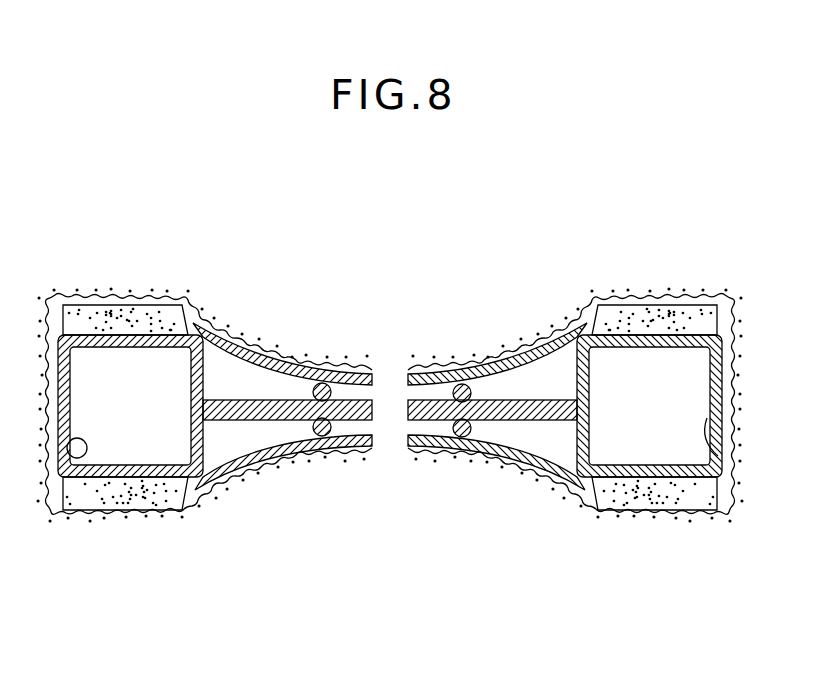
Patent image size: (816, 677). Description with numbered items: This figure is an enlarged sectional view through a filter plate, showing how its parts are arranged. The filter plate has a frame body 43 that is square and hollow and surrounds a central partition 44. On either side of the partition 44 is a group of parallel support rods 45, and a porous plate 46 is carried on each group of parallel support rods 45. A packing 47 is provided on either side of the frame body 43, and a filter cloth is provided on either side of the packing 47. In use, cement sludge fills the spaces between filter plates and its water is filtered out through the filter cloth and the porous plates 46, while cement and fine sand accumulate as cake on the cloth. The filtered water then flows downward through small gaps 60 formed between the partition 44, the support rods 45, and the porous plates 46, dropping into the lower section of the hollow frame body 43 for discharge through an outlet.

The frame body 43 is at (63, 478).
The partition 44 is at (243, 421).
The parallel support rods 45 is at (300, 444).
The porous plate 46 is at (291, 366).
The packing 47 is at (121, 500).
The small gaps 60 is at (451, 388).